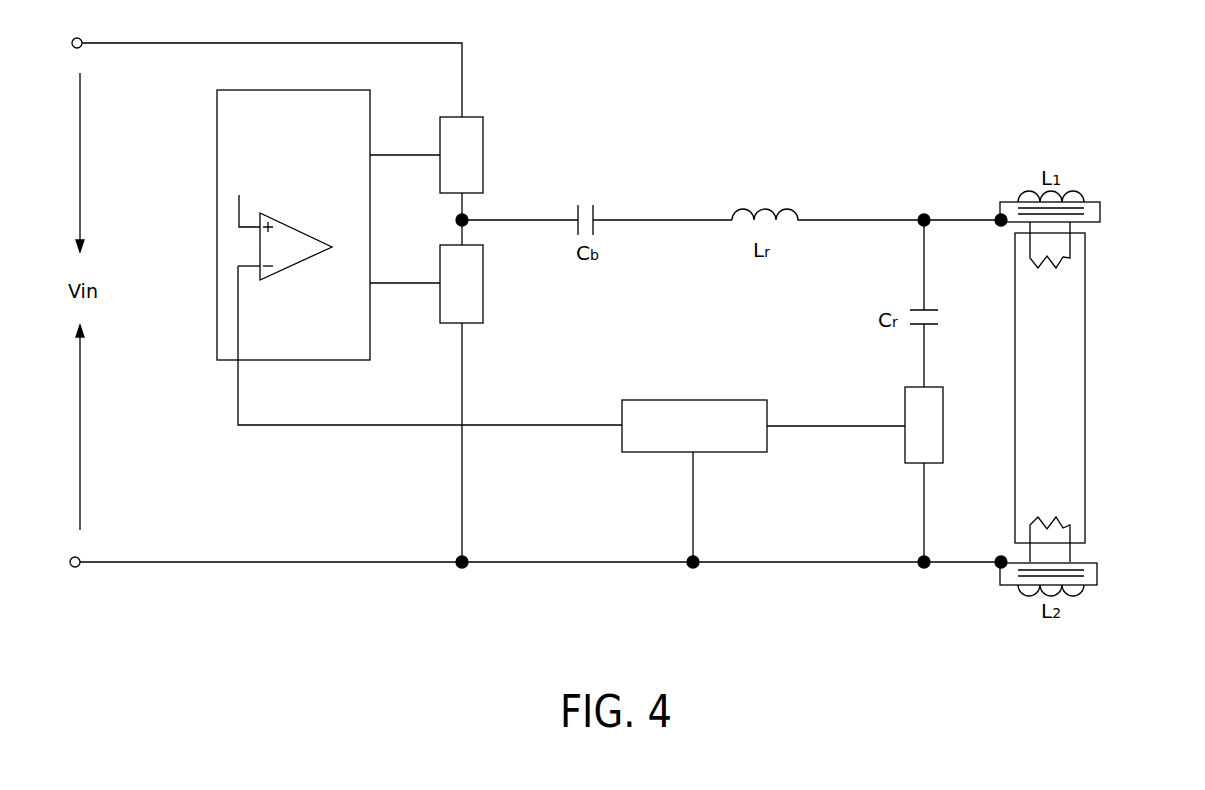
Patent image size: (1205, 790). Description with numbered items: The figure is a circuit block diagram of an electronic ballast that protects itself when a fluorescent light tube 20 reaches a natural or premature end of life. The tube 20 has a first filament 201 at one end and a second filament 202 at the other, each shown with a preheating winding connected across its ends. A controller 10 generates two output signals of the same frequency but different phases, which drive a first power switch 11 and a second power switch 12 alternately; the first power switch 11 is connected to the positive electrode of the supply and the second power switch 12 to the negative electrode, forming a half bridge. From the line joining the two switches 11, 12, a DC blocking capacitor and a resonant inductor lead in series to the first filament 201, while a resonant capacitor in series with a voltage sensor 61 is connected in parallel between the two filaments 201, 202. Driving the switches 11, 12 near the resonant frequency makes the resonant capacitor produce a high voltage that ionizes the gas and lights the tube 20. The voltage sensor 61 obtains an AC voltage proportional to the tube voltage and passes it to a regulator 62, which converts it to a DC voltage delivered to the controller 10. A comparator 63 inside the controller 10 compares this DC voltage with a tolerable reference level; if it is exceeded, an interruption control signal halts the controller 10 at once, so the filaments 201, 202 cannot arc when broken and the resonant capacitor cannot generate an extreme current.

The controller 10 is at (237, 116).
The first power switch 11 is at (467, 147).
The second power switch 12 is at (468, 294).
The comparator 63 is at (298, 255).
The regulator 62 is at (735, 440).
The voltage sensor 61 is at (918, 400).
The fluorescent light tube 20 is at (1057, 392).
The first filament 201 is at (1060, 250).
The second filament 202 is at (1060, 535).